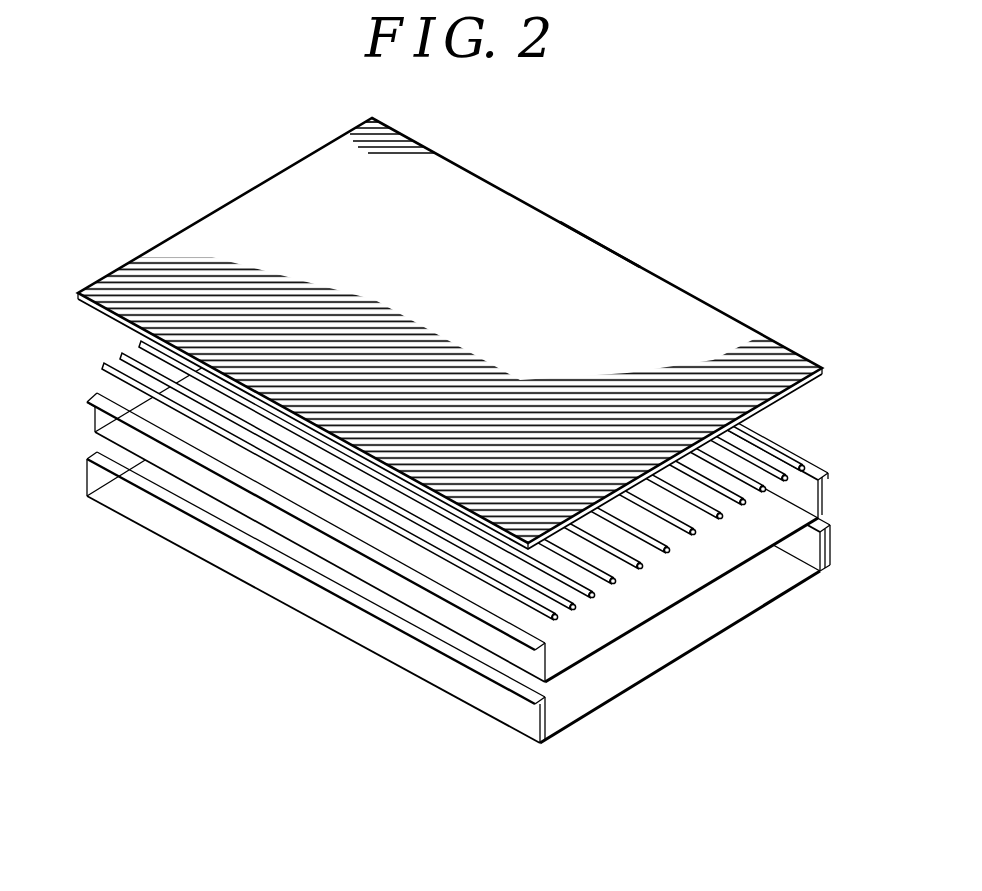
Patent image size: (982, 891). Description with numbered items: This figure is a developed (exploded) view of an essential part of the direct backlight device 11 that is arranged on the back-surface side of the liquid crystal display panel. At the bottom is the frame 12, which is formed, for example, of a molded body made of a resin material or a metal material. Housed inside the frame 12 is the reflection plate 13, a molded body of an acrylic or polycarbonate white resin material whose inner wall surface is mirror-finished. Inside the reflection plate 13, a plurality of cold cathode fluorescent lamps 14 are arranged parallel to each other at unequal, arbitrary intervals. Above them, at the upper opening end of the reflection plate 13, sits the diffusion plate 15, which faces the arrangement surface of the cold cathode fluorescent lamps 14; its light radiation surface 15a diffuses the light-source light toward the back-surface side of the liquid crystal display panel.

The backlight device 11 is at (450, 333).
The frame 12 is at (597, 690).
The reflection plate 13 is at (720, 561).
The cold cathode fluorescent lamps 14 is at (638, 568).
The diffusion plate 15 is at (713, 313).
The light radiation surface 15a is at (588, 247).